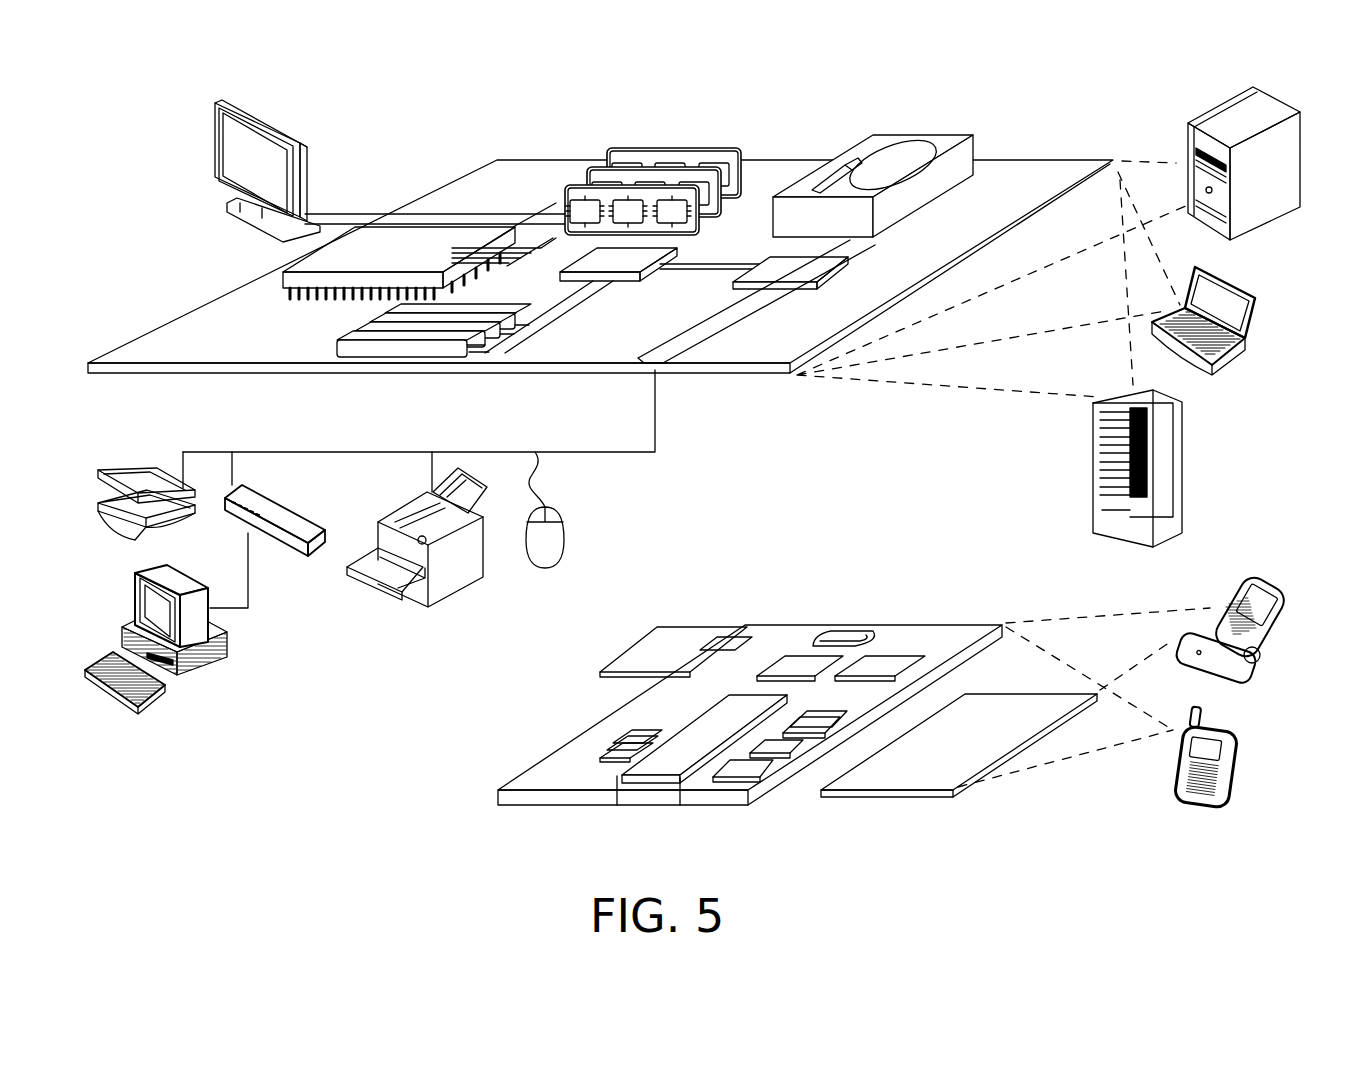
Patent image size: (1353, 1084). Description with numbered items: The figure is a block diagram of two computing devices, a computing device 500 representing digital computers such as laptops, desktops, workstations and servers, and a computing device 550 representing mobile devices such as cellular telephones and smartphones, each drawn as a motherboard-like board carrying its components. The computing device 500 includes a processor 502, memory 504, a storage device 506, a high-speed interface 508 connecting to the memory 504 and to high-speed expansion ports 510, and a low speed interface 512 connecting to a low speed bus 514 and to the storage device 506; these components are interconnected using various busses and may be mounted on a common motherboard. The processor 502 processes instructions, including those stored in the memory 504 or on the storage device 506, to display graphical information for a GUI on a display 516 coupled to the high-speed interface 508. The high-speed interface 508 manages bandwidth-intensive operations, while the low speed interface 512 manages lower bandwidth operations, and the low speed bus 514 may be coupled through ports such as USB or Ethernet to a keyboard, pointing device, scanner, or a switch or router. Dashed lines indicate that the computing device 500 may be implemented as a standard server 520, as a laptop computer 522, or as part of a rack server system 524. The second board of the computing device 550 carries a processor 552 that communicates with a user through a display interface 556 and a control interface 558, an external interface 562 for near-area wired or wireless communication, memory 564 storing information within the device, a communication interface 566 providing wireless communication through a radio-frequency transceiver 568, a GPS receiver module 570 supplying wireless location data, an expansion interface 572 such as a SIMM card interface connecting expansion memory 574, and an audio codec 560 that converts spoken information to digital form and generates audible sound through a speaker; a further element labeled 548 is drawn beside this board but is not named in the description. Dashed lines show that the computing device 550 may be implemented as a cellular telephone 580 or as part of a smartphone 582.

The computing device 500 is at (413, 120).
The processor 502 is at (283, 278).
The memory 504 is at (620, 148).
The storage device 506 is at (861, 135).
The high-speed interface 508 is at (528, 208).
The high-speed expansion ports 510 is at (345, 338).
The low speed interface 512 is at (770, 257).
The low speed bus 514 is at (653, 363).
The display 516 is at (215, 103).
The standard server 520 is at (1188, 137).
The laptop computer 522 is at (1263, 290).
The rack server system 524 is at (1093, 490).
The substrate plate 548 is at (950, 795).
The computing device 550 is at (463, 804).
The processor 552 is at (677, 783).
The display interface 556 is at (757, 782).
The control interface 558 is at (797, 775).
The audio codec 560 is at (817, 778).
The external interface 562 is at (643, 805).
The memory 564 is at (600, 755).
The communication interface 566 is at (800, 660).
The transceiver 568 is at (873, 660).
The GPS receiver module 570 is at (847, 630).
The expansion interface 572 is at (728, 642).
The expansion memory 574 is at (650, 640).
The cellular telephone 580 is at (1236, 588).
The smartphone 582 is at (1178, 768).